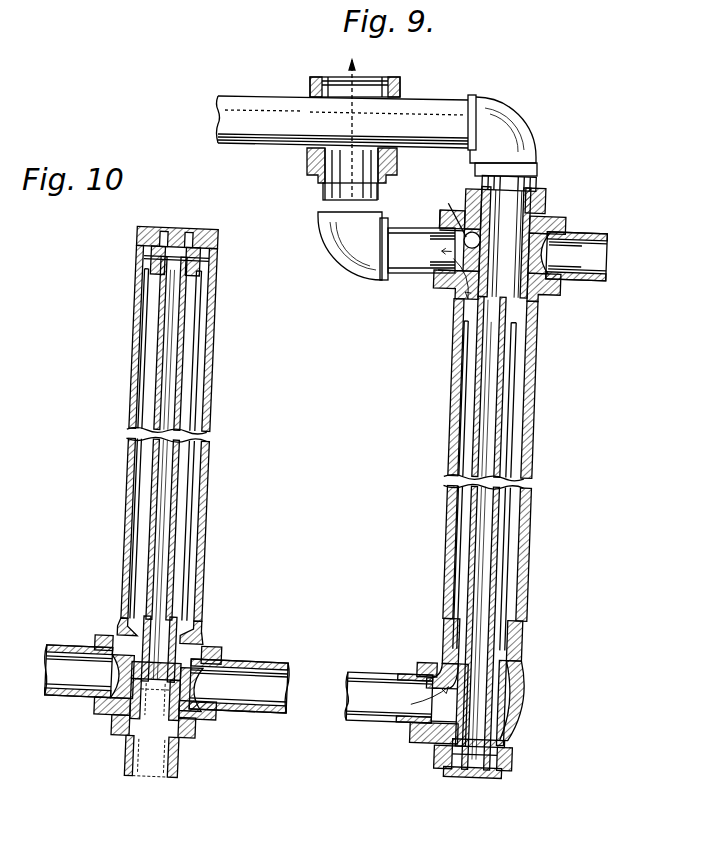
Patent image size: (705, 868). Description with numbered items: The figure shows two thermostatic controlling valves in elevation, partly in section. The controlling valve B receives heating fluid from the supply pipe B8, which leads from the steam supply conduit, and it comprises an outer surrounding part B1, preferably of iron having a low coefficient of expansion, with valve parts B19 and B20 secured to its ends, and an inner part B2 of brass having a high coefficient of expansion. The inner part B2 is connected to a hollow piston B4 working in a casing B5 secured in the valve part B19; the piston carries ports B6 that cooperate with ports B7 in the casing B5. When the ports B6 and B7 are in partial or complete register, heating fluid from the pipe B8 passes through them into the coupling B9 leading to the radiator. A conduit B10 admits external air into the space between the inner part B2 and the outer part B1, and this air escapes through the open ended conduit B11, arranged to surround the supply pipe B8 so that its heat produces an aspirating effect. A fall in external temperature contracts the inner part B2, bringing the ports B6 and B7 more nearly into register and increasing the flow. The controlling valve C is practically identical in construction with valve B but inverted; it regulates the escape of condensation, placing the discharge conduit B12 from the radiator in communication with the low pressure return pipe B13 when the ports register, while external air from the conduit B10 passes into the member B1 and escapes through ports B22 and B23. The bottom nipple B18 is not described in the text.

In FIG. 9, the controlling valve B is at (424, 447).
In FIG. 9, the outer surrounding part B1 is at (538, 400).
In FIG. 10, the outer surrounding part B1 is at (135, 356).
In FIG. 9, the inner part B2 is at (497, 468).
In FIG. 10, the inner part B2 is at (186, 422).
In FIG. 9, the hollow piston B4 is at (545, 207).
In FIG. 10, the hollow piston B4 is at (237, 648).
In FIG. 9, the casing B5 is at (556, 226).
In FIG. 10, the casing B5 is at (232, 668).
In FIG. 9, the ports B6 is at (600, 272).
In FIG. 10, the ports B6 is at (140, 715).
In FIG. 9, the ports B7 is at (421, 250).
In FIG. 10, the ports B7 is at (166, 685).
In FIG. 9, the pipe B8 is at (420, 100).
In FIG. 9, the coupling B9 is at (585, 280).
In FIG. 9, the conduit B10 is at (378, 730).
In FIG. 10, the conduit B10 is at (270, 710).
In FIG. 9, the open ended conduit B11 is at (378, 282).
In FIG. 10, the discharge conduit B12 is at (85, 703).
In FIG. 9, the low pressure return pipe B13 is at (490, 778).
In FIG. 10, the bottom nipple B18 is at (172, 779).
In FIG. 9, the valve part B19 is at (533, 196).
In FIG. 10, the valve part B19 is at (214, 640).
In FIG. 9, the valve part B20 is at (540, 705).
In FIG. 10, the ports B22 is at (155, 230).
In FIG. 10, the ports B23 is at (145, 290).
In FIG. 10, the controlling valve C is at (81, 437).